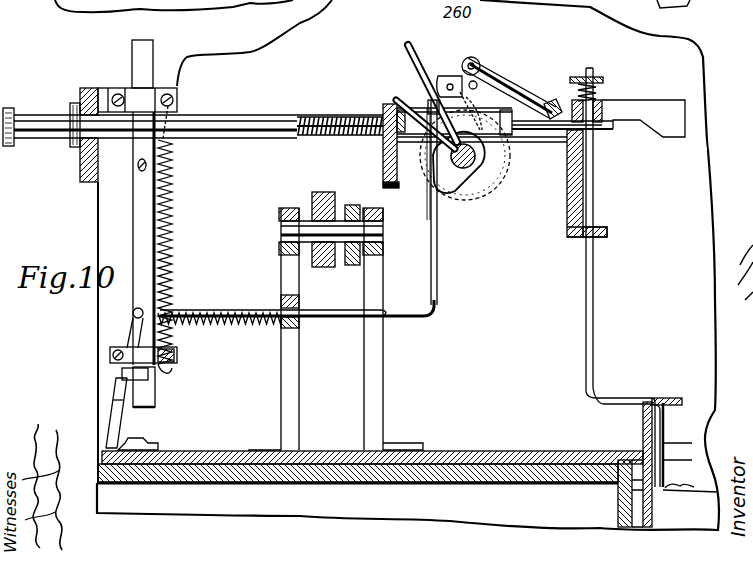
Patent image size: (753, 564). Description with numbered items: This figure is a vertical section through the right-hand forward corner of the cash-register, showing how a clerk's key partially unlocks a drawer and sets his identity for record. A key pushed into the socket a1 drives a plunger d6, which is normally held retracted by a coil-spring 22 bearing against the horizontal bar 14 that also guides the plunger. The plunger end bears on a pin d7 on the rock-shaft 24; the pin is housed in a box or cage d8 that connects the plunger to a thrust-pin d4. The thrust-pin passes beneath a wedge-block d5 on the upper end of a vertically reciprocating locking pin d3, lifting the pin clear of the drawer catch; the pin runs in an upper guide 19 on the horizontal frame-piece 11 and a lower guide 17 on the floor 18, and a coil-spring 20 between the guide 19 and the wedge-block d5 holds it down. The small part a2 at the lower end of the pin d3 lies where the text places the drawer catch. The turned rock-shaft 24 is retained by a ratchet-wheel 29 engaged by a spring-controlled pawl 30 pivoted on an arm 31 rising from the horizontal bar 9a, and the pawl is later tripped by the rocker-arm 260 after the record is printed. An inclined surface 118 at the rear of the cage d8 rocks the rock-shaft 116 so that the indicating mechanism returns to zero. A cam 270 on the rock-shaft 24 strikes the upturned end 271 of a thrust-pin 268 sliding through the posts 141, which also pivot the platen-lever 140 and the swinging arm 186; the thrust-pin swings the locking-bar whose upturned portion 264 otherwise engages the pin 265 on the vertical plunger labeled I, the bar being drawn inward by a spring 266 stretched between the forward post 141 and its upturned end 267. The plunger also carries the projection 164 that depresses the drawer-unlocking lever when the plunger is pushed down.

The socket a1 is at (233, 127).
The coil-spring 22 is at (312, 115).
The plunger d6 is at (350, 115).
The pin or projection d7 is at (398, 100).
The spring-controlled pawl 30 is at (425, 62).
The rocker-arm 260 is at (132, 312).
The arm 31 is at (487, 92).
The rock-shaft 116 is at (520, 97).
The inclined surface 118 is at (533, 110).
The guide 19 is at (573, 77).
The coil-spring 20 is at (597, 91).
The thrust-pin d4 is at (608, 129).
The wedge-block d5 is at (670, 120).
The horizontal bar 9a is at (542, 133).
The ratchet-wheel 29 is at (507, 177).
The rock-shaft 24 is at (478, 189).
The box or cage d8 is at (415, 140).
The horizontal rod or bar 14 is at (385, 149).
The swinging lever 140 is at (320, 190).
The swinging arm 186 is at (352, 205).
The post 141 is at (301, 286).
The horizontally-reciprocating thrust-pin 268 is at (333, 318).
The cam 270 is at (451, 178).
The upturned rear end 271 is at (437, 276).
The horizontal bar 11 is at (572, 213).
The vertically-reciprocating pin d3 is at (594, 280).
The floor 18 is at (486, 452).
The guide 17 is at (647, 418).
The lug a2 is at (668, 487).
The projection 164 is at (139, 170).
The spring I is at (142, 250).
The pin or projection 265 is at (112, 362).
The upturned portion 264 is at (120, 383).
The upturned right-hand end 267 is at (115, 418).
The spring 266 is at (235, 330).